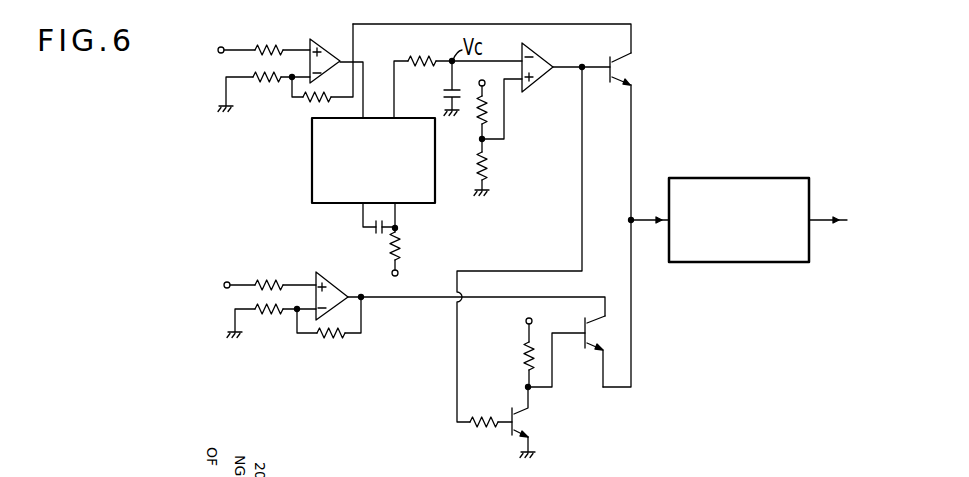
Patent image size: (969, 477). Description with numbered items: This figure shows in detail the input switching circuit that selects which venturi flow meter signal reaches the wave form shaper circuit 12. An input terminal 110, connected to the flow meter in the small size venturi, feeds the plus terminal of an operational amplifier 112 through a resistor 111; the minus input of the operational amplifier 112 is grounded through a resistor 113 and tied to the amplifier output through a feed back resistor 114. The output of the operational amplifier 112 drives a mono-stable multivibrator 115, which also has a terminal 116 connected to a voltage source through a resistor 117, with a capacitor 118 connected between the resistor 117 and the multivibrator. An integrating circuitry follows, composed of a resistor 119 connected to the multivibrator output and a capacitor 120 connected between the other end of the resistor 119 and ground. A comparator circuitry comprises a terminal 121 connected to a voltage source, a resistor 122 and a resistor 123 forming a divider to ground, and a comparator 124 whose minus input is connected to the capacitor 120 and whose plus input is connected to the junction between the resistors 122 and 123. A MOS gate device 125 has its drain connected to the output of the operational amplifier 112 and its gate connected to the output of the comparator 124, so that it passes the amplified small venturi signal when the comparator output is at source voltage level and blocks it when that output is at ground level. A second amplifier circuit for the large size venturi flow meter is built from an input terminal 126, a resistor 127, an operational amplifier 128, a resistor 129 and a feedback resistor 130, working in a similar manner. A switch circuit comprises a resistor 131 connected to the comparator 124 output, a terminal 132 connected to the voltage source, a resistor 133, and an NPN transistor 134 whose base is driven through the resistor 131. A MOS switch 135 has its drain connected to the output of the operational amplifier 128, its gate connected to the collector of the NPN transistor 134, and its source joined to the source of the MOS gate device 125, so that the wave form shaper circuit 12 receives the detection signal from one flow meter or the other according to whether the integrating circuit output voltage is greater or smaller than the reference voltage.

The wave form shaper circuit 12 is at (745, 178).
The input terminal 110 is at (216, 50).
The resistor 111 is at (270, 43).
The operational amplifier 112 is at (324, 39).
The resistor 113 is at (267, 85).
The feed back resistor 114 is at (310, 103).
The mono-stable multivibrator 115 is at (312, 172).
The terminal 116 is at (398, 273).
The resistor 117 is at (400, 244).
The capacitor 118 is at (378, 235).
The resistor 119 is at (418, 54).
The capacitor 120 is at (444, 91).
The terminal 121 is at (484, 80).
The resistor 122 is at (478, 114).
The resistor 123 is at (490, 163).
The comparator 124 is at (543, 75).
The MOS gate device 125 is at (620, 65).
The input terminal 126 is at (222, 284).
The resistor 127 is at (270, 279).
The operational amplifier 128 is at (333, 284).
The resistor 129 is at (271, 318).
The resistor 130 is at (333, 340).
The resistor 131 is at (485, 430).
The terminal 132 is at (525, 319).
The resistor 133 is at (522, 350).
The NPN transistor 134 is at (527, 422).
The MOS switch 135 is at (599, 332).